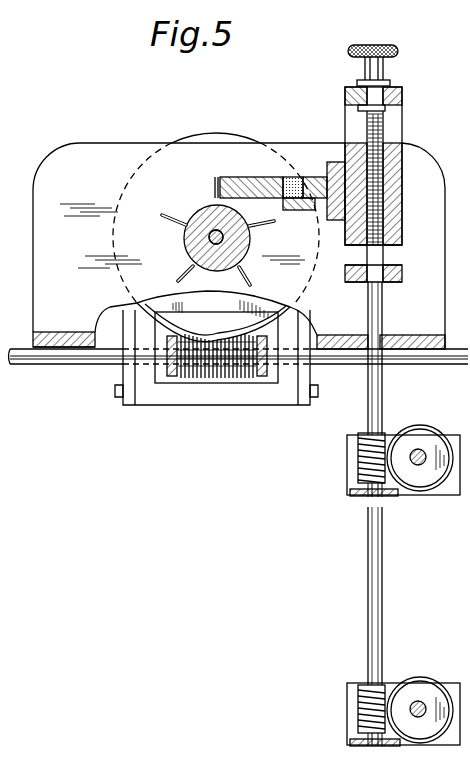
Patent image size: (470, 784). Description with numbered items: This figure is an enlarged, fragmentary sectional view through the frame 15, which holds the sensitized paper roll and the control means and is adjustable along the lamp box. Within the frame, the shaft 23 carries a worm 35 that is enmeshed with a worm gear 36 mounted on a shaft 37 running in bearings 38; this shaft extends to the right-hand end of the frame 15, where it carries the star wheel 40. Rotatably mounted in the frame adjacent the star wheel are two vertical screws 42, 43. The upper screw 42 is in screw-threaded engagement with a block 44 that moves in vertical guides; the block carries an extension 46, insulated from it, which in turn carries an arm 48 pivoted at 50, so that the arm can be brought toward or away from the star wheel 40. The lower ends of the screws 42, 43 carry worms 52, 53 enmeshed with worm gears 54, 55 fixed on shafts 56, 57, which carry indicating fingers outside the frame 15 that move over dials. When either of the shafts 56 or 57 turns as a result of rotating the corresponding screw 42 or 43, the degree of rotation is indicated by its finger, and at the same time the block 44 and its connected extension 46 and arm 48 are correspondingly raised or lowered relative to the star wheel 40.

The frame 15 is at (78, 143).
The shaft 23 is at (415, 365).
The worm 35 is at (215, 373).
The worm gear 36 is at (213, 316).
The shaft 37 is at (212, 237).
The bearings 38 is at (148, 398).
The star wheel 40 is at (190, 255).
The vertical screw 42 is at (374, 400).
The vertical screw 43 is at (375, 599).
The block 44 is at (338, 172).
The extension 46 is at (300, 210).
The arm 48 is at (236, 177).
The pivot 50 is at (293, 180).
The worm 52 is at (360, 458).
The worm 53 is at (360, 705).
The worm gear 54 is at (413, 493).
The worm gear 55 is at (410, 743).
The shaft 56 is at (420, 458).
The shaft 57 is at (420, 710).